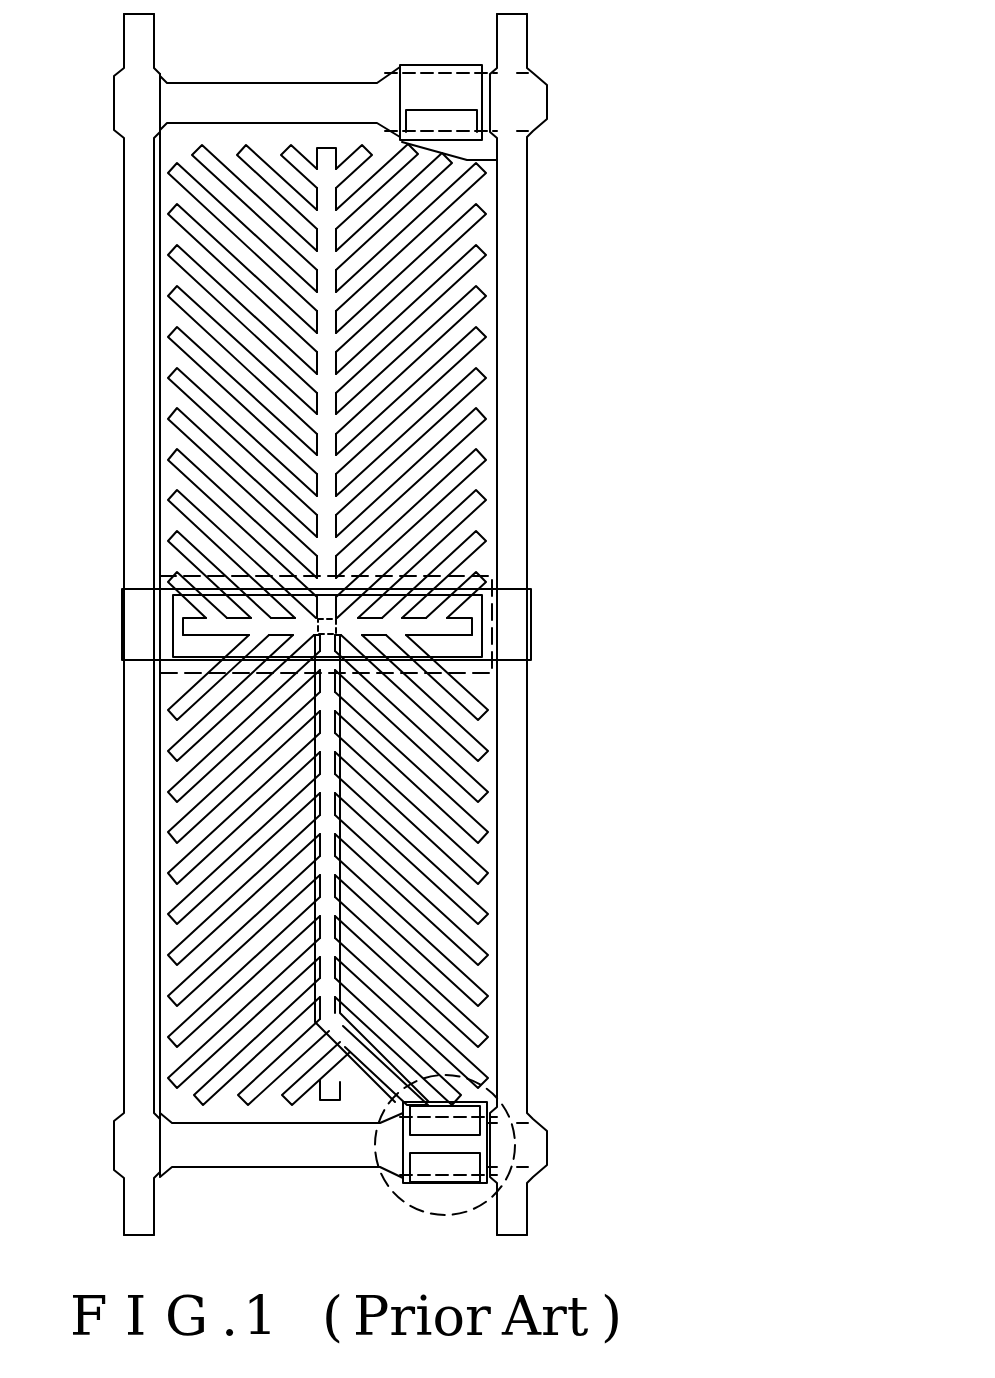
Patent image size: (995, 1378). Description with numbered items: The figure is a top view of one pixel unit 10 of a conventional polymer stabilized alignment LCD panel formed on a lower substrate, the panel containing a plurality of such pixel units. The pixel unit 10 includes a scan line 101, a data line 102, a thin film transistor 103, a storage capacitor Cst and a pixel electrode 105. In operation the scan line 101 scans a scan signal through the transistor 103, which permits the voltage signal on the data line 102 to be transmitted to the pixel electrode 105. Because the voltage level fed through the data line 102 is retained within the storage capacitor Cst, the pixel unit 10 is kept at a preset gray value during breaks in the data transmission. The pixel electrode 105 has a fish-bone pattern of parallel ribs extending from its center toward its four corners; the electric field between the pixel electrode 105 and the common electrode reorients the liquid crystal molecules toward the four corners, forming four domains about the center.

The pixel unit 10 is at (633, 111).
The scan line 101 is at (237, 1153).
The data line 102 is at (514, 929).
The thin film transistor 103 is at (484, 1097).
The pixel electrode 105 is at (468, 336).
The storage capacitor Cst is at (484, 580).